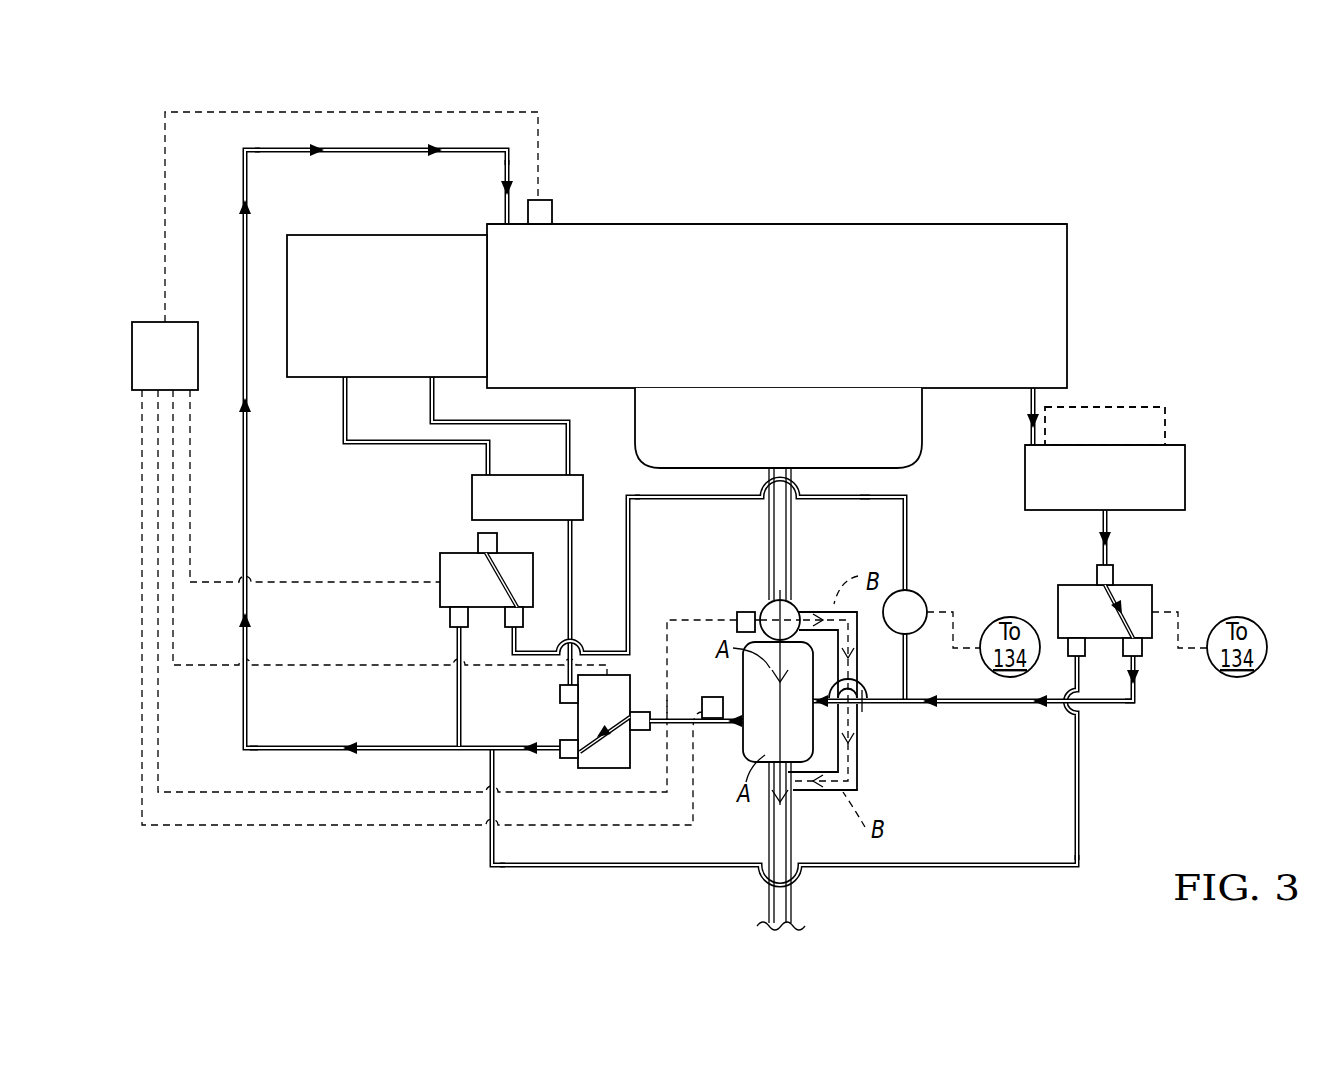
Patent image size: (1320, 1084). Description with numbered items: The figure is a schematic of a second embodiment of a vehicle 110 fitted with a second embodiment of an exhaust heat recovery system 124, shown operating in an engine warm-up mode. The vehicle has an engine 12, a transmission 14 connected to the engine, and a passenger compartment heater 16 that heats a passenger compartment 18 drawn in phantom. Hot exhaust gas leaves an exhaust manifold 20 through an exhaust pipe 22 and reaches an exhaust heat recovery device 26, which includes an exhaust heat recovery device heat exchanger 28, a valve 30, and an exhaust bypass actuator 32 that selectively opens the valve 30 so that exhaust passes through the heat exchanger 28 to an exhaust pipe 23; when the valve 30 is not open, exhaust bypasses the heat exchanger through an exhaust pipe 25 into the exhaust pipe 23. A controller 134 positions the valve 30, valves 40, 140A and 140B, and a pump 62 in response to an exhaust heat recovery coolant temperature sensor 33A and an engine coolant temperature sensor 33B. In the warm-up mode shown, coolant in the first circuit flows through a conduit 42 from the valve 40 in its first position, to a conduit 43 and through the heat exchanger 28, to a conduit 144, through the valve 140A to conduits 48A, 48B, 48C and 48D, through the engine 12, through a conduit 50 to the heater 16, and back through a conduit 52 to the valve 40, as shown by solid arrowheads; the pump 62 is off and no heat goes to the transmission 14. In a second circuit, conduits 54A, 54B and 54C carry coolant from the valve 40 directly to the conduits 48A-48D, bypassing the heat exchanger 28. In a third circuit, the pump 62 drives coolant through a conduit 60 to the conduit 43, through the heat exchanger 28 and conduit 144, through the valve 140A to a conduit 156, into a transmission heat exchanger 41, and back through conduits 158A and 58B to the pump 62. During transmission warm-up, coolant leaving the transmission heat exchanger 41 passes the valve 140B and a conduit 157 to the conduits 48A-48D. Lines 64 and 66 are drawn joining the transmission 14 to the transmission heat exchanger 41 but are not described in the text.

The engine 12 is at (777, 306).
The transmission 14 is at (387, 306).
The passenger compartment heater 16 is at (1105, 477).
The passenger compartment 18 is at (1105, 426).
The exhaust manifold 20 is at (778, 428).
The exhaust pipe 22 is at (790, 542).
The exhaust pipe 23 is at (770, 910).
The exhaust pipe 25 is at (862, 635).
The exhaust heat recovery device 26 is at (722, 580).
The exhaust heat recovery device heat exchanger 28 is at (778, 702).
The valve 30 is at (797, 603).
The exhaust bypass actuator 32 is at (745, 610).
The exhaust heat recovery coolant temperature sensor 33A is at (710, 695).
The engine coolant temperature sensor 33B is at (552, 212).
The valve 40 is at (1152, 597).
The transmission heat exchanger 41 is at (527, 497).
The conduit 42 is at (1103, 705).
The conduit 43 is at (873, 703).
The conduit 48A is at (380, 742).
The conduit 48B is at (248, 482).
The conduit 48C is at (368, 153).
The conduit 48D is at (503, 167).
The conduit 50 is at (1030, 400).
The conduit 52 is at (1100, 558).
The conduit 54A is at (1073, 790).
The conduit 54B is at (940, 866).
The conduit 54C is at (490, 838).
The conduit 58B is at (907, 520).
The conduit 60 is at (907, 657).
The pump 62 is at (920, 595).
The transmission fluid line 64 is at (425, 445).
The transmission fluid line 66 is at (507, 422).
The vehicle 110 is at (815, 122).
The exhaust heat recovery system 124 is at (1122, 362).
The controller 134 is at (434, 468).
The valve 140A is at (630, 675).
The valve 140B is at (460, 553).
The conduit 144 is at (700, 723).
The conduit 156 is at (572, 592).
The conduit 157 is at (463, 722).
The conduit 158A is at (722, 498).